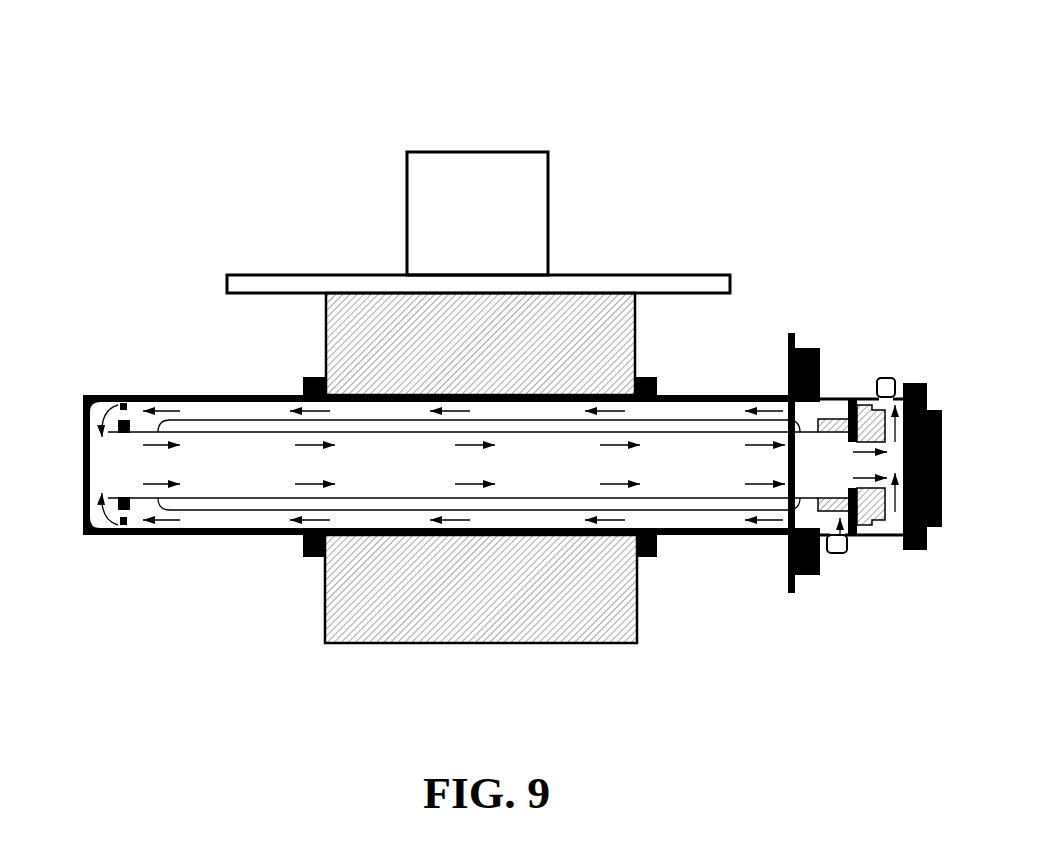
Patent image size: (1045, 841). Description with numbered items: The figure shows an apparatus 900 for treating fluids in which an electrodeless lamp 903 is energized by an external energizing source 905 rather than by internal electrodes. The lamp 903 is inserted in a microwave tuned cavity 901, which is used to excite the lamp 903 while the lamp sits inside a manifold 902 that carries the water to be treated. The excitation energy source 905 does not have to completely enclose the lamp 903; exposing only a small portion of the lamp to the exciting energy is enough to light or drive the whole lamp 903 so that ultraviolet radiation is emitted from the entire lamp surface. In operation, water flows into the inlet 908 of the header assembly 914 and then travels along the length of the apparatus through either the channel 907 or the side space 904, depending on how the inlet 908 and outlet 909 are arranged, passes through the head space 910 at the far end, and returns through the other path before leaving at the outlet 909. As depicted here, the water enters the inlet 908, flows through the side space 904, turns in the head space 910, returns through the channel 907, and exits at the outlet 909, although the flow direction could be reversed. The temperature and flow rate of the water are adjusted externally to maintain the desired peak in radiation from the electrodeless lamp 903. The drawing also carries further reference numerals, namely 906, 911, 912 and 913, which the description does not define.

The apparatus 900 is at (735, 190).
The microwave tuned cavity 901 is at (367, 645).
The manifold 902 is at (520, 530).
The electrodeless lamp 903 is at (667, 508).
The side space 904 is at (673, 412).
The external energizing source 905 is at (477, 152).
The upper collar 906 is at (392, 358).
The channel 907 is at (242, 473).
The inlet 908 is at (837, 553).
The outlet 909 is at (885, 377).
The head space 910 is at (102, 412).
The lower seal 911 is at (123, 518).
The flange 912 is at (277, 535).
The end flange 913 is at (737, 535).
The header assembly 914 is at (923, 368).